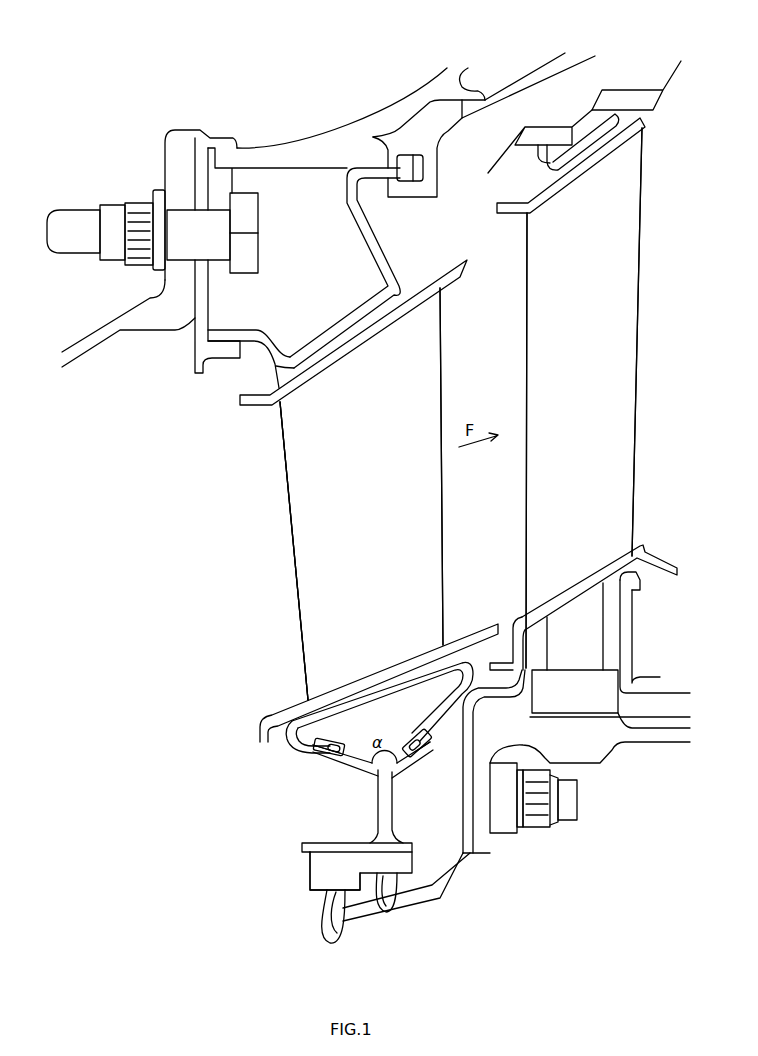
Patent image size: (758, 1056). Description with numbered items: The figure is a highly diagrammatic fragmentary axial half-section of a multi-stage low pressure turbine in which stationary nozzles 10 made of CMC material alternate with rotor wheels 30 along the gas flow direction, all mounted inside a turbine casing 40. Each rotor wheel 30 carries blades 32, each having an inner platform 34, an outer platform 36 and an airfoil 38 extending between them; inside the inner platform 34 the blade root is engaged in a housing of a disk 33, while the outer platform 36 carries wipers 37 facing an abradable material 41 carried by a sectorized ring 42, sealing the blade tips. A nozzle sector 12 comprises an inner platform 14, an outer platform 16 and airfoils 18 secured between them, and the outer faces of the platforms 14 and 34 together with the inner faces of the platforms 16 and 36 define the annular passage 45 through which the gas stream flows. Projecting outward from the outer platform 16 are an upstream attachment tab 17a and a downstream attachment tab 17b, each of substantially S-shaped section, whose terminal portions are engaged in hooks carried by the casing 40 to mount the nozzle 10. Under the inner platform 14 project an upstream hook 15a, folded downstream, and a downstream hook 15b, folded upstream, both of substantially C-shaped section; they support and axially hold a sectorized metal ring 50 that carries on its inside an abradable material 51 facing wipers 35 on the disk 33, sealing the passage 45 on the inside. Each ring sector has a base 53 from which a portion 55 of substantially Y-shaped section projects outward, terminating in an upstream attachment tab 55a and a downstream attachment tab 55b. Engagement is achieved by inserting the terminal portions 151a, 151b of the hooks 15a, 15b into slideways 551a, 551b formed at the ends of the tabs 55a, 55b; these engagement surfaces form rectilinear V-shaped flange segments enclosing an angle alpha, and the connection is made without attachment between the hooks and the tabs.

The stationary nozzle 10 is at (262, 487).
The nozzle sector 12 is at (285, 547).
The inner platform 14 is at (413, 657).
The upstream hook 15a is at (287, 742).
The downstream hook 15b is at (462, 668).
The outer platform 16 is at (382, 330).
The upstream attachment tab 17a is at (268, 332).
The downstream attachment tab 17b is at (360, 238).
The airfoil 18 is at (370, 477).
The rotor wheel 30 is at (512, 396).
The blade 32 is at (634, 378).
The disk 33 is at (606, 750).
The inner platform 34 is at (580, 588).
The wipers 35 is at (382, 912).
The outer platform 36 is at (562, 188).
The wipers 37 is at (536, 164).
The airfoil 38 is at (592, 377).
The turbine casing 40 is at (316, 140).
The abradable material 41 is at (615, 100).
The sectorized ring 42 is at (530, 100).
The annular passage 45 is at (484, 513).
The sectorized metal ring 50 is at (458, 862).
The abradable material 51 is at (322, 880).
The base 53 is at (398, 850).
The Y-shaped portion 55 is at (392, 812).
The upstream attachment tab 55a is at (362, 758).
The downstream attachment tab 55b is at (396, 784).
The terminal portion 151a is at (320, 756).
The terminal portion 151b is at (420, 755).
The slideway 551a is at (332, 722).
The slideway 551b is at (412, 730).